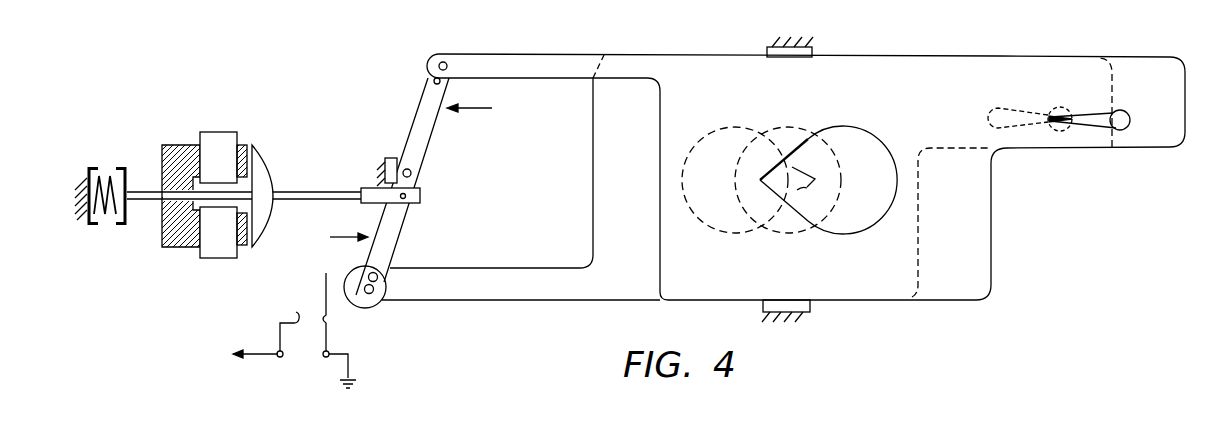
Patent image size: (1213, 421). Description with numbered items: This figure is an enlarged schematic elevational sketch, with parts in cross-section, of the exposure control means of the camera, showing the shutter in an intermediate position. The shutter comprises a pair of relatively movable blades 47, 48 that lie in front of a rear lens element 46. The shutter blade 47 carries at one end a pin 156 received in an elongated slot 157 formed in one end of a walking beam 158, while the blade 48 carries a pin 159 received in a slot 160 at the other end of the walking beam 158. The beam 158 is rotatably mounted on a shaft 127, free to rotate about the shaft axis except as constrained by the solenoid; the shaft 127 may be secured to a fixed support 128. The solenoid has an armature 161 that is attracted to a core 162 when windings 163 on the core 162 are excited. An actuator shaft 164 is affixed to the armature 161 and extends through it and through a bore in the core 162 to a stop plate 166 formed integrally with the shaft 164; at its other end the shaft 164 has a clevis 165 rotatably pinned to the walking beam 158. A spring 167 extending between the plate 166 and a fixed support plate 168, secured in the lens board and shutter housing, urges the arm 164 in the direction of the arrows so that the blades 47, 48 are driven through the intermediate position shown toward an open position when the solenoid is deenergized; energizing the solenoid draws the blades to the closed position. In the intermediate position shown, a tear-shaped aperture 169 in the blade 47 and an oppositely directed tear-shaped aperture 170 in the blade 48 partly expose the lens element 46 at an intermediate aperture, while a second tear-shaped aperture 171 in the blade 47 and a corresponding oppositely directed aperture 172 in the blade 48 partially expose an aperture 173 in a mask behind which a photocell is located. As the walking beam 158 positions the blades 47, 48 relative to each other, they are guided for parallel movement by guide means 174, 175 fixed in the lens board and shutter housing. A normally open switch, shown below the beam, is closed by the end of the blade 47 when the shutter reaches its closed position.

The rear lens element 46 is at (793, 167).
The shutter blade 47 is at (638, 293).
The shutter blade 48 is at (973, 310).
The shaft 127 is at (412, 174).
The fixed support 128 is at (388, 158).
The pin 156 is at (378, 283).
The elongated slot 157 is at (370, 294).
The walking beam 158 is at (406, 247).
The pin 159 is at (446, 62).
The slot 160 is at (441, 84).
The armature 161 is at (268, 170).
The core 162 is at (166, 143).
The windings 163 is at (222, 132).
The actuator shaft 164 is at (338, 201).
The clevis 165 is at (421, 197).
The stop plate 166 is at (128, 168).
The spring 167 is at (105, 216).
The fixed support plate 168 is at (86, 170).
The tear-shaped aperture 169 is at (798, 190).
The tear-shaped aperture 170 is at (861, 142).
The second tear-shaped aperture 171 is at (1017, 107).
The tear-shaped aperture 172 is at (1123, 110).
The photocell aperture 173 is at (1067, 108).
The guide means 174 is at (812, 52).
The guide means 175 is at (807, 306).